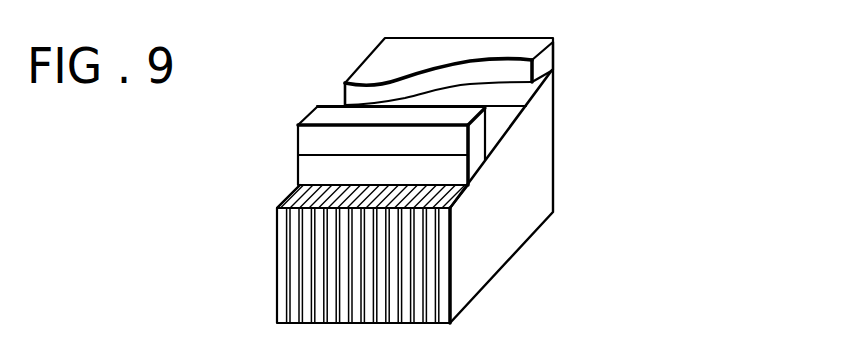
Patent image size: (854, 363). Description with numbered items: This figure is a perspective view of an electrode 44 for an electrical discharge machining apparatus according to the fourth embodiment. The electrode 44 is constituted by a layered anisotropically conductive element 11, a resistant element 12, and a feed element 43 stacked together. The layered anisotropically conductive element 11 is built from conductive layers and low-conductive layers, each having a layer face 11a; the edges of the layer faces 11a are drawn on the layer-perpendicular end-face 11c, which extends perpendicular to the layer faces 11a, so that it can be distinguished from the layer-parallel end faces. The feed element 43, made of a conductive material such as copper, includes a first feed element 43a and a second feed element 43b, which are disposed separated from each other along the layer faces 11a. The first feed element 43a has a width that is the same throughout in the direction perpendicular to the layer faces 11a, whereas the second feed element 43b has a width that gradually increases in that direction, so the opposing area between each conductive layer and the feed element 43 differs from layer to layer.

The layered anisotropically conductive element 11 is at (533, 153).
The layer face 11a is at (403, 303).
The layer-perpendicular end-face 11c is at (292, 192).
The resistant element 12 is at (523, 120).
The feed element 43 is at (664, 12).
The first feed element 43a is at (522, 102).
The second feed element 43b is at (527, 46).
The electrode 44 is at (739, 187).